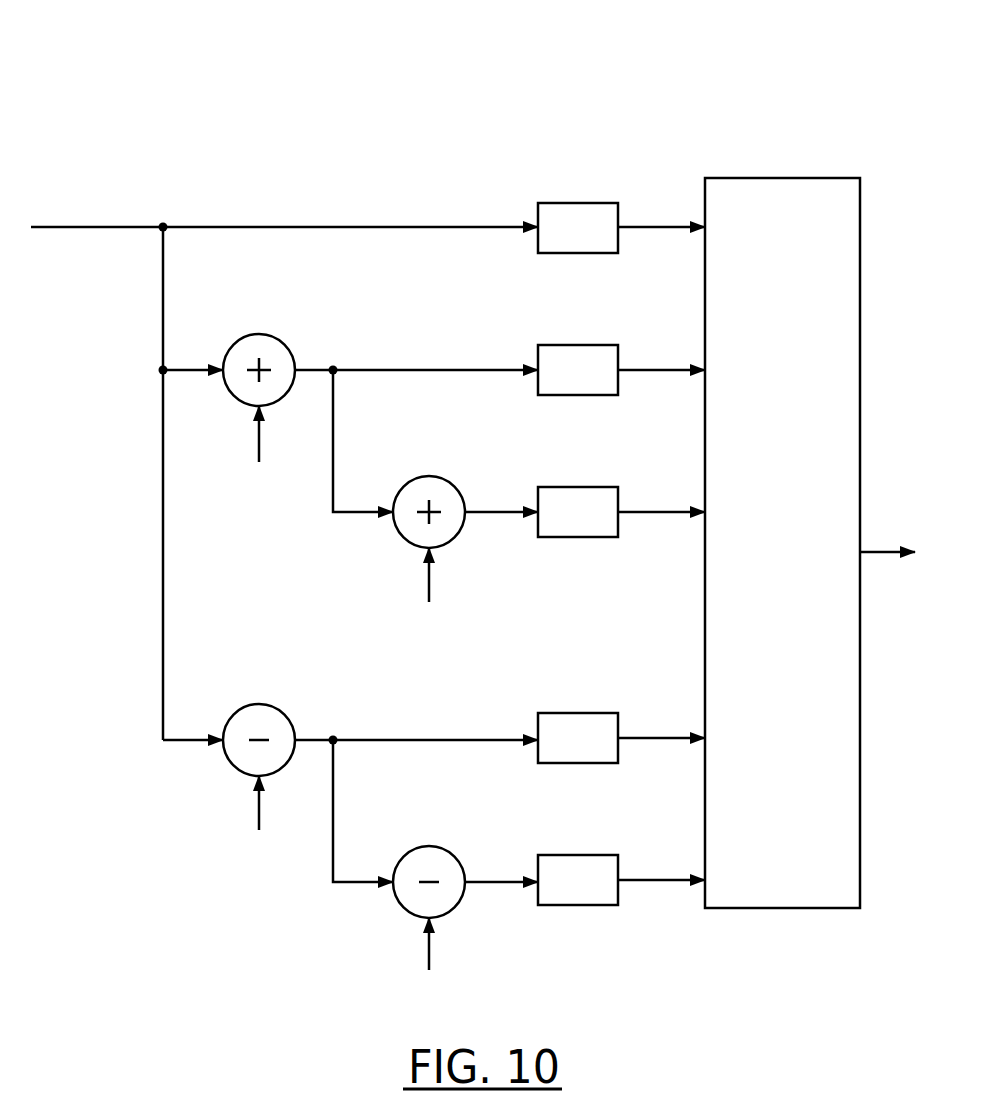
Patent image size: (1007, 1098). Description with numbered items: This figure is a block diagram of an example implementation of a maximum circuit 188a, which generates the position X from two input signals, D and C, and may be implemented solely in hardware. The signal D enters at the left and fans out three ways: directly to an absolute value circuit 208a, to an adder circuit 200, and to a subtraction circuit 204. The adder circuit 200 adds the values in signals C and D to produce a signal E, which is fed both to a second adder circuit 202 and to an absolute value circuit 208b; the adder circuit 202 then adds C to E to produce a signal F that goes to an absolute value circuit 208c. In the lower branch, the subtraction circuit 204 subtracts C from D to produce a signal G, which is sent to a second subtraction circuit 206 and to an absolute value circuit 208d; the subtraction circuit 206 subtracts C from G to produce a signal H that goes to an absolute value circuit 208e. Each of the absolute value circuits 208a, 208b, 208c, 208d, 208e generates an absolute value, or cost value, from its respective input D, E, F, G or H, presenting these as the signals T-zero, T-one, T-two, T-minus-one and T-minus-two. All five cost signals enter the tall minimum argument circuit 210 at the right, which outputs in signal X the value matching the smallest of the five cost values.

The maximum circuit 188a is at (400, 92).
The adder circuit 200 is at (252, 335).
The adder circuit 202 is at (423, 477).
The subtraction circuit 204 is at (252, 705).
The subtraction circuit 206 is at (423, 847).
The absolute value circuit 208a is at (580, 203).
The absolute value circuit 208b is at (580, 345).
The absolute value circuit 208c is at (580, 487).
The absolute value circuit 208d is at (580, 713).
The absolute value circuit 208e is at (580, 855).
The minimum argument circuit 210 is at (752, 178).